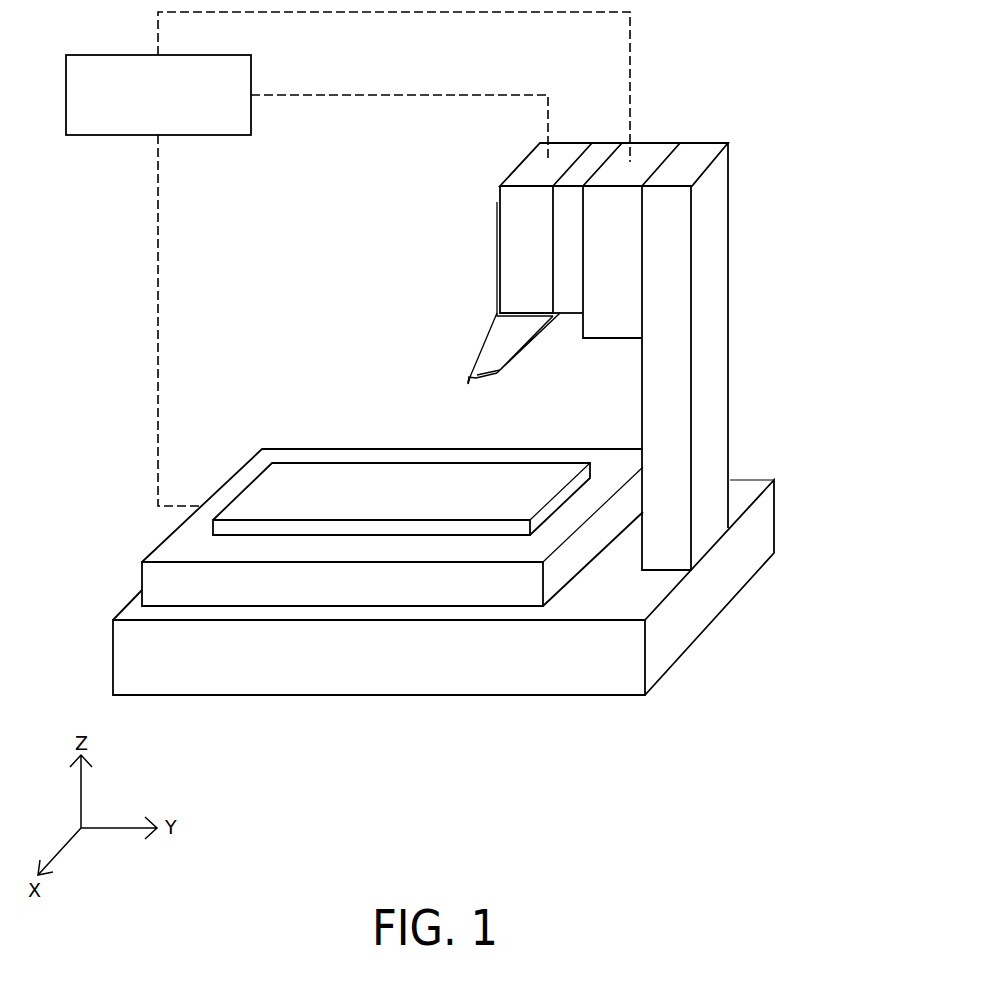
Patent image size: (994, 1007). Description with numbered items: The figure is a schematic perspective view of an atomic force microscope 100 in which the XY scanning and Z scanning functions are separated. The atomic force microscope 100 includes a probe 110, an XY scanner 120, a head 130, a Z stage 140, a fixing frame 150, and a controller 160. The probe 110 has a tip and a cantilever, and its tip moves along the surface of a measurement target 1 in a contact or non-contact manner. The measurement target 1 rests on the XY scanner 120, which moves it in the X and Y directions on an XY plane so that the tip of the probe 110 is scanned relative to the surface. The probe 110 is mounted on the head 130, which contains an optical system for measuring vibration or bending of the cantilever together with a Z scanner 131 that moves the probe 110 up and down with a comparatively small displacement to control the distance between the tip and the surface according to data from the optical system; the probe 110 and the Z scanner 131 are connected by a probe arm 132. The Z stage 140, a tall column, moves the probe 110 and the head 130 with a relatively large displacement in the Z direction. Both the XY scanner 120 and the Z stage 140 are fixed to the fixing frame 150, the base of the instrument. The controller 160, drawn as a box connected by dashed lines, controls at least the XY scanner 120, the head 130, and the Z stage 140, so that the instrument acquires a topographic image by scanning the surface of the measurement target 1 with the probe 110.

The measurement target 1 is at (292, 472).
The atomic force microscope 100 is at (452, 421).
The probe 110 is at (483, 383).
The XY scanner 120 is at (178, 547).
The head 130 is at (450, 284).
The Z scanner 131 is at (520, 227).
The probe arm 132 is at (498, 345).
The Z stage 140 is at (651, 155).
The fixing frame 150 is at (623, 680).
The controller 160 is at (235, 75).